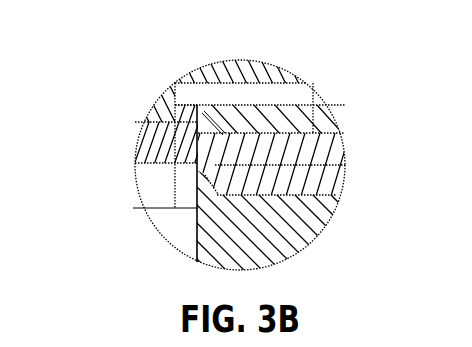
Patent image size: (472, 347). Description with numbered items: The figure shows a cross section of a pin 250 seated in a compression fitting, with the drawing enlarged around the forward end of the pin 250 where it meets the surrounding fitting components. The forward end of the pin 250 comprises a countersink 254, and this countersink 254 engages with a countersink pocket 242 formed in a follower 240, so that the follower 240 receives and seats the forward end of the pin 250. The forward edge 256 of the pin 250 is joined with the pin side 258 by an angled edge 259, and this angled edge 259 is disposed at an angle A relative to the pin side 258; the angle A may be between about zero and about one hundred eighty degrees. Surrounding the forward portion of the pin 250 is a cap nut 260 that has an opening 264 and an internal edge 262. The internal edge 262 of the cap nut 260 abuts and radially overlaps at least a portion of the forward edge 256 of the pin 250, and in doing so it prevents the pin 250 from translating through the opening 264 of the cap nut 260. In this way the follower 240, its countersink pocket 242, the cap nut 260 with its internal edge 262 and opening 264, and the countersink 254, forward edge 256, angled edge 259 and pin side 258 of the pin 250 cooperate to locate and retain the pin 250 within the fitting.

The follower 240 is at (275, 213).
The countersink pocket 242 is at (212, 208).
The pin 250 is at (325, 160).
The countersink 254 is at (215, 177).
The forward edge 256 is at (200, 170).
The pin side 258 is at (315, 133).
The angled edge 259 is at (200, 113).
The cap nut 260 is at (157, 135).
The internal edge 262 is at (143, 165).
The opening 264 is at (140, 173).
The angle A is at (224, 108).